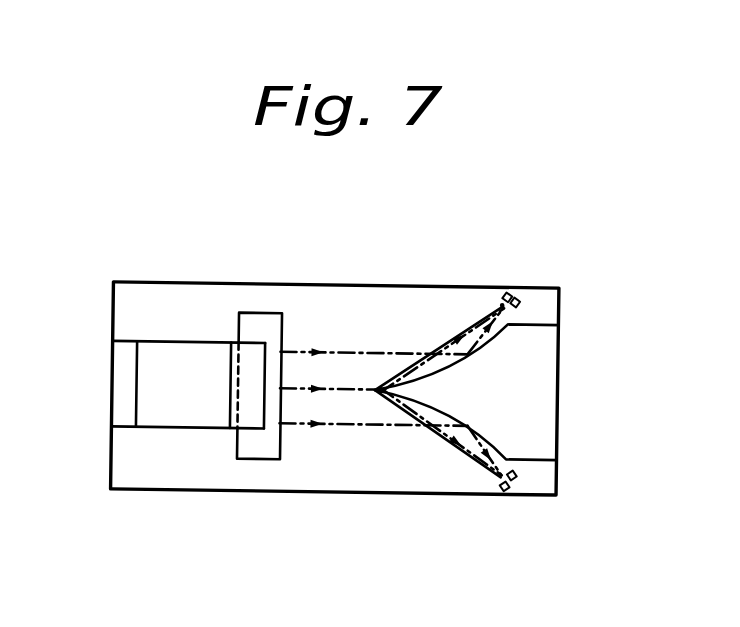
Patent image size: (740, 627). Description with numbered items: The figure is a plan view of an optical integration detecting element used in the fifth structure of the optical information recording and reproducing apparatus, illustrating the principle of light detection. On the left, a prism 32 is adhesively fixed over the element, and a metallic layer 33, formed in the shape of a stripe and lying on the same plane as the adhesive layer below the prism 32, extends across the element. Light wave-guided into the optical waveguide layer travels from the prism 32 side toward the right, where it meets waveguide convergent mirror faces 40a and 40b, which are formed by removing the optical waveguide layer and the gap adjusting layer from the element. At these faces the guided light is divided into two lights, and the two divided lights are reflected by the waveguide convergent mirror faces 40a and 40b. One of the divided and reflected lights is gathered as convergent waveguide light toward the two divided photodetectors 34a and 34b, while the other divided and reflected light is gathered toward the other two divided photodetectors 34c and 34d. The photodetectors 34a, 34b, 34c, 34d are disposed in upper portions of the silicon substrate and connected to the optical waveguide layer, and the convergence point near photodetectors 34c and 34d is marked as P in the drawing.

The prism 32 is at (120, 386).
The metallic layer 33 is at (259, 324).
The photodetector 34a is at (505, 489).
The photodetector 34b is at (520, 477).
The photodetector 34c is at (518, 299).
The photodetector 34d is at (507, 290).
The waveguide convergent mirror face 40a is at (492, 335).
The waveguide convergent mirror face 40b is at (495, 437).
The focal point P is at (497, 299).